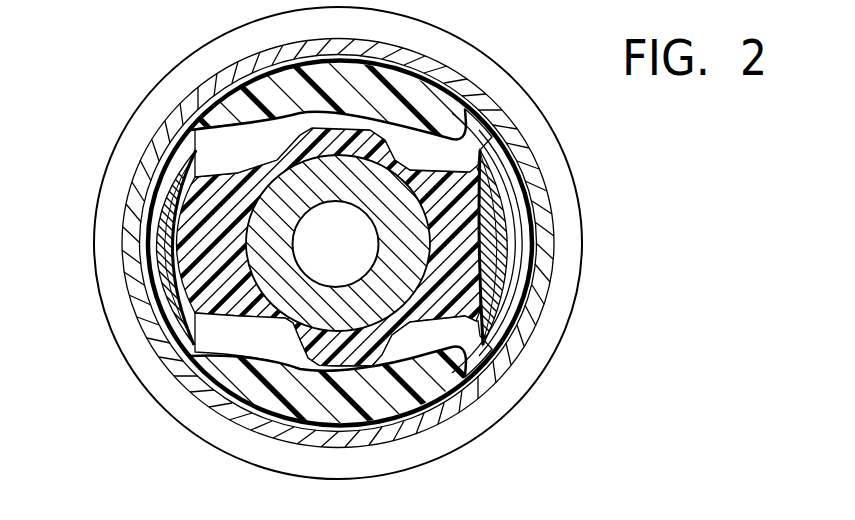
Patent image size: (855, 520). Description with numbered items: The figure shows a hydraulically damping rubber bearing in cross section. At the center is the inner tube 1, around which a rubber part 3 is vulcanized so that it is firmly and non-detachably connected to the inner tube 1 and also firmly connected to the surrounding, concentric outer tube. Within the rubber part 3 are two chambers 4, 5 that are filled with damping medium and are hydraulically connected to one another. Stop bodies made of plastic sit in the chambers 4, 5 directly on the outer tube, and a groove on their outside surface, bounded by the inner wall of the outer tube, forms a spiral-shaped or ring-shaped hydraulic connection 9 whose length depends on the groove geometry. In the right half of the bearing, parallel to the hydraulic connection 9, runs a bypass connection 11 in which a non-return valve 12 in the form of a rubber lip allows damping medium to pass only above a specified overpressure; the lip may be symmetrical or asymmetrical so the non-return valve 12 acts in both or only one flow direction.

The inner tube 1 is at (265, 255).
The rubber part 3 is at (210, 205).
The chamber 4 is at (200, 154).
The chamber 5 is at (213, 331).
The hydraulic connection 9 is at (178, 130).
The bypass connection 11 is at (517, 293).
The non-return valve 12 is at (517, 247).